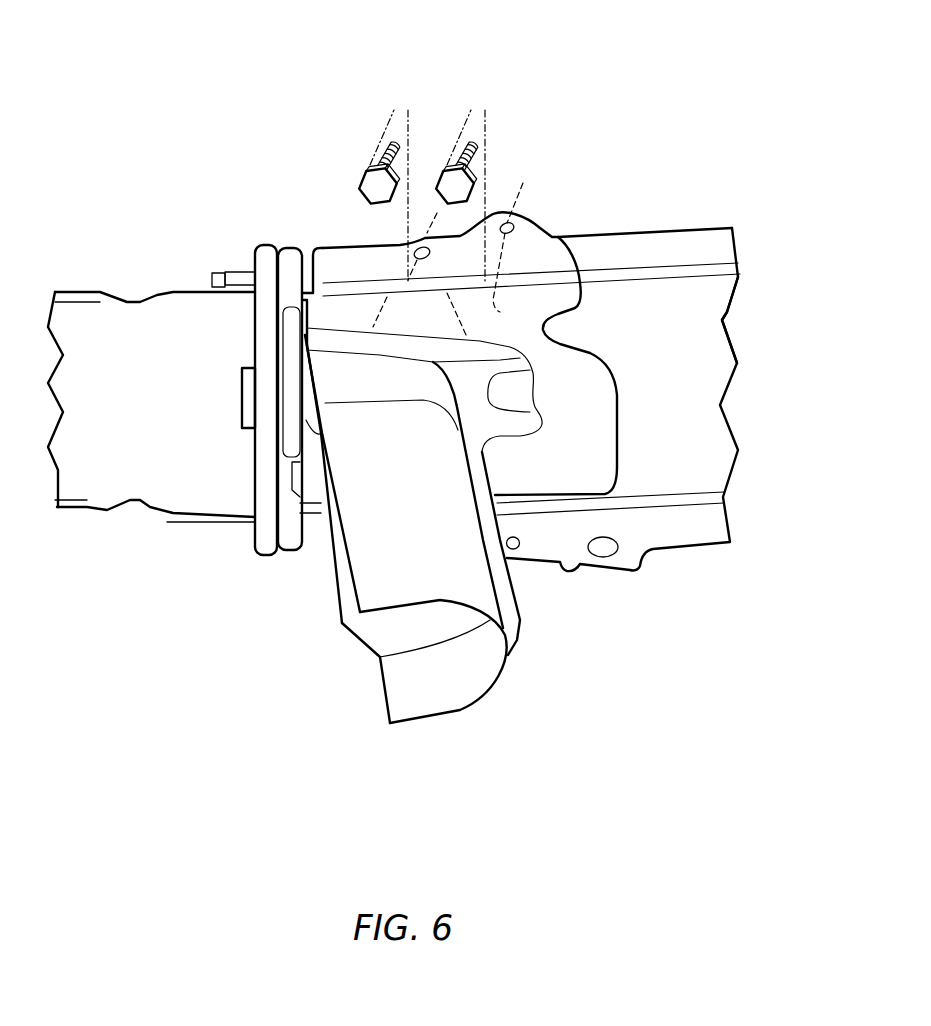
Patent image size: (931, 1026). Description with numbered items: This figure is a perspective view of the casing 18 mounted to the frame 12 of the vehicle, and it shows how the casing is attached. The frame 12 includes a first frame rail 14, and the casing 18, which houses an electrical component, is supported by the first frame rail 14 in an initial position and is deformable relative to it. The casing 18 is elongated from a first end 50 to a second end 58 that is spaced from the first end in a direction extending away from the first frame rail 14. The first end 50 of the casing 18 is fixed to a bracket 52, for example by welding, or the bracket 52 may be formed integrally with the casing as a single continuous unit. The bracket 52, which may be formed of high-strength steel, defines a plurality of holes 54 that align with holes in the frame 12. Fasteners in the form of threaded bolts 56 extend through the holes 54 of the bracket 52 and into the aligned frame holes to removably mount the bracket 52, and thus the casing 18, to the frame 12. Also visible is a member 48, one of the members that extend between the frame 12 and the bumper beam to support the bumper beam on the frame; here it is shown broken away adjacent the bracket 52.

The frame 12 is at (689, 202).
The first frame rail 14 is at (687, 325).
The casing 18 is at (462, 542).
The member 48 is at (123, 467).
The first end 50 is at (339, 332).
The bracket 52 is at (523, 240).
The holes 54 is at (427, 256).
The threaded bolts 56 is at (445, 160).
The second end 58 is at (437, 719).